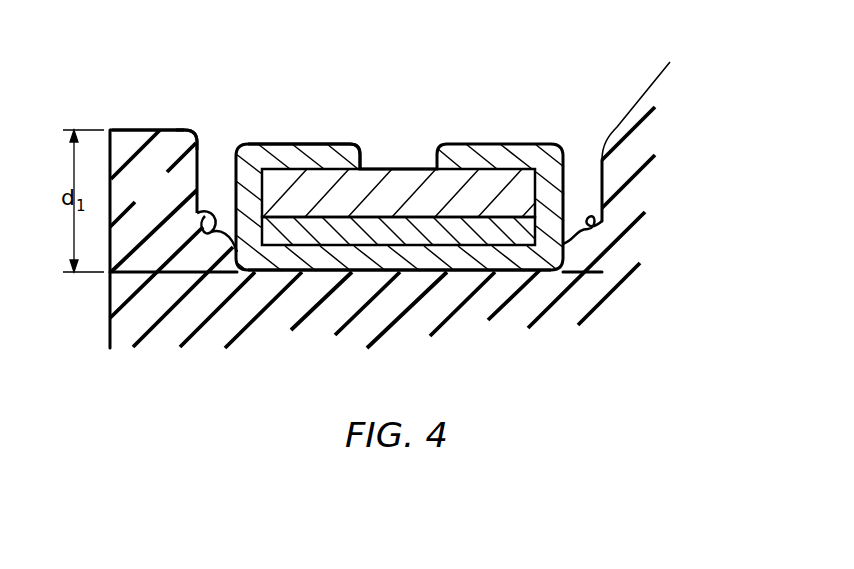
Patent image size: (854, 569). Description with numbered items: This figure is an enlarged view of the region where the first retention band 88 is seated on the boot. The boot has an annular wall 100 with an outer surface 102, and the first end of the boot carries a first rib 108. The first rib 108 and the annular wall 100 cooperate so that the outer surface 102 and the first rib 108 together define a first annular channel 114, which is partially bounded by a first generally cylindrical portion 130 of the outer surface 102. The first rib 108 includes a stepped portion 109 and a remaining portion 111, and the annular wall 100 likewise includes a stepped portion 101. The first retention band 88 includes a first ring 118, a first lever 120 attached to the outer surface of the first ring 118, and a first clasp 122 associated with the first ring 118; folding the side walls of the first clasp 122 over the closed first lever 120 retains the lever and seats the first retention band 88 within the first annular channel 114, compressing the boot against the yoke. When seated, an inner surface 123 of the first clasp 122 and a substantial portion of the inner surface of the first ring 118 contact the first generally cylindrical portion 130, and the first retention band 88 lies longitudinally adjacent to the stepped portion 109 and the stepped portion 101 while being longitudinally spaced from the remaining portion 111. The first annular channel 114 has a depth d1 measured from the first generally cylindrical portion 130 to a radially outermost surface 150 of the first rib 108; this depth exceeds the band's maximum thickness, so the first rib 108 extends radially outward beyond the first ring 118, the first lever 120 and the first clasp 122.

The first retention band 88 is at (400, 218).
The annular wall 100 is at (390, 182).
The stepped portion of the annular wall 101 is at (605, 222).
The outer surface of the annular wall 102 is at (624, 109).
The first rib 108 is at (141, 129).
The stepped portion of the first rib 109 is at (197, 213).
The remaining portion of the first rib 111 is at (172, 118).
The first annular channel 114 is at (216, 138).
The first ring 118 is at (290, 232).
The first lever 120 is at (387, 167).
The first clasp 122 is at (325, 134).
The inner surface of the first clasp 123 is at (505, 273).
The first generally cylindrical portion 130 is at (447, 263).
The radially outermost surface of the first rib 150 is at (152, 128).